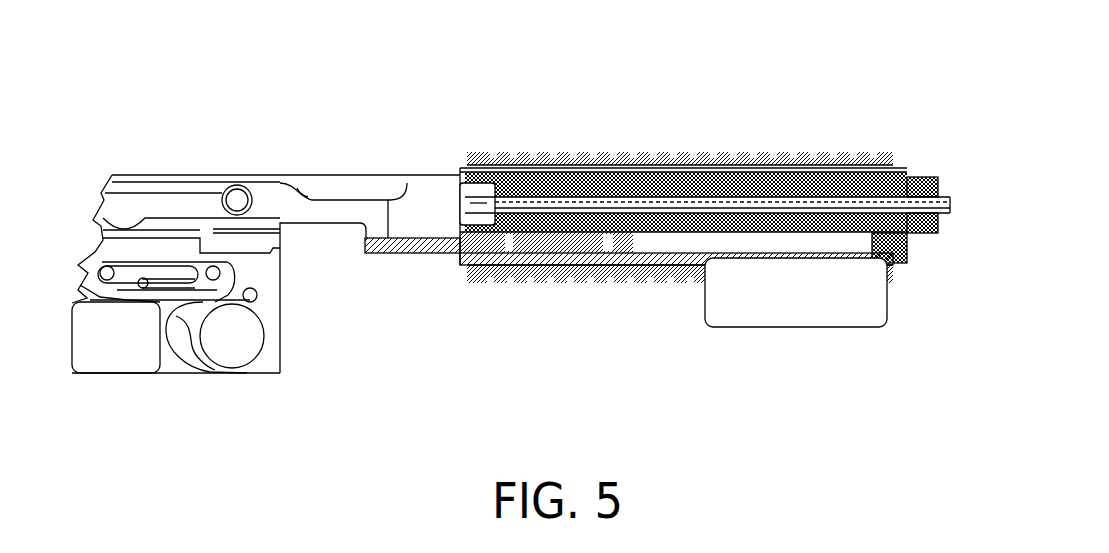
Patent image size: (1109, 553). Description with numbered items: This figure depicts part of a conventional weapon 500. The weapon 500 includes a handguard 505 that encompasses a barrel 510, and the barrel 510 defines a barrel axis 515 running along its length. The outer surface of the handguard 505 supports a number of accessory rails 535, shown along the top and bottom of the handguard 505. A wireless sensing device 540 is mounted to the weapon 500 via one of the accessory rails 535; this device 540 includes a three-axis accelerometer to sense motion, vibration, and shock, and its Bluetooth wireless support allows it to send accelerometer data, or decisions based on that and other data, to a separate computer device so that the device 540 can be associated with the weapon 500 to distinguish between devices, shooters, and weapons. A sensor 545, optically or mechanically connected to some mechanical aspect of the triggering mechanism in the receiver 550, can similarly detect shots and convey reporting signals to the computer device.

The weapon 500 is at (377, 82).
The handguard 505 is at (812, 150).
The barrel 510 is at (945, 224).
The barrel axis 515 is at (966, 198).
The accessory rails 535 is at (577, 153).
The wireless sensing device 540 is at (796, 292).
The sensor 545 is at (116, 337).
The receiver 550 is at (257, 377).